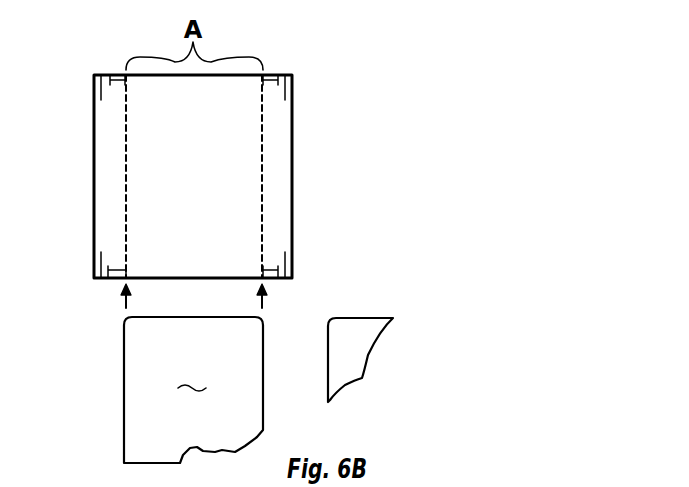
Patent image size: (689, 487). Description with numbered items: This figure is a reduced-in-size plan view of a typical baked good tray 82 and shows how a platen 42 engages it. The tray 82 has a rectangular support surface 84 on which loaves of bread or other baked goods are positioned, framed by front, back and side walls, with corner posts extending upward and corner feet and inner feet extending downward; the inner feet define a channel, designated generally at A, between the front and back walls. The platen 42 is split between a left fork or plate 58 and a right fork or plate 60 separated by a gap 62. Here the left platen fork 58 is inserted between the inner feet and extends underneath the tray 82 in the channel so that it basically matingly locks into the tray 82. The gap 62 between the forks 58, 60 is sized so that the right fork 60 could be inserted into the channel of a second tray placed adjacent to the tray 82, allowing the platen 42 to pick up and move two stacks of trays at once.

The baked good tray 82 is at (300, 110).
The support surface 84 is at (238, 172).
The platen 42 is at (150, 423).
The left fork or plate 58 is at (192, 373).
The right fork or plate 60 is at (350, 334).
The gap 62 is at (294, 378).